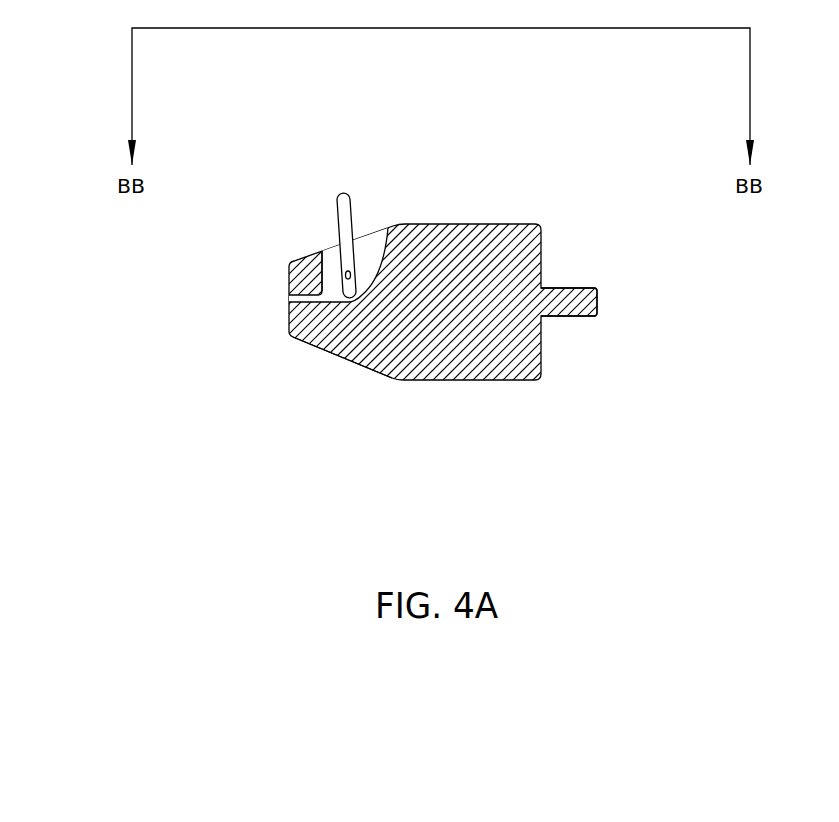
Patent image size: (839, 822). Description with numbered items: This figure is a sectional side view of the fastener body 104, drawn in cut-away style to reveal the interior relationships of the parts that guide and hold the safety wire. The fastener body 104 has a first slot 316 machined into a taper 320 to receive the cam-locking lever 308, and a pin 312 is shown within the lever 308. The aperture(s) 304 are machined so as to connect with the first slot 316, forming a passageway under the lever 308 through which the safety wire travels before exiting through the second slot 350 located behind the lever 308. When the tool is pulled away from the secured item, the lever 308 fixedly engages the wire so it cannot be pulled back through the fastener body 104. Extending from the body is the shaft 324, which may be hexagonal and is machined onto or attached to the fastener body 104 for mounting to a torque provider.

The fastener body 104 is at (583, 420).
The aperture(s) 304 is at (258, 302).
The lever 308 is at (343, 160).
The pin 312 is at (362, 227).
The first slot 316 is at (309, 242).
The taper 320 is at (328, 375).
The shaft 324 is at (575, 263).
The second slot 350 is at (378, 255).